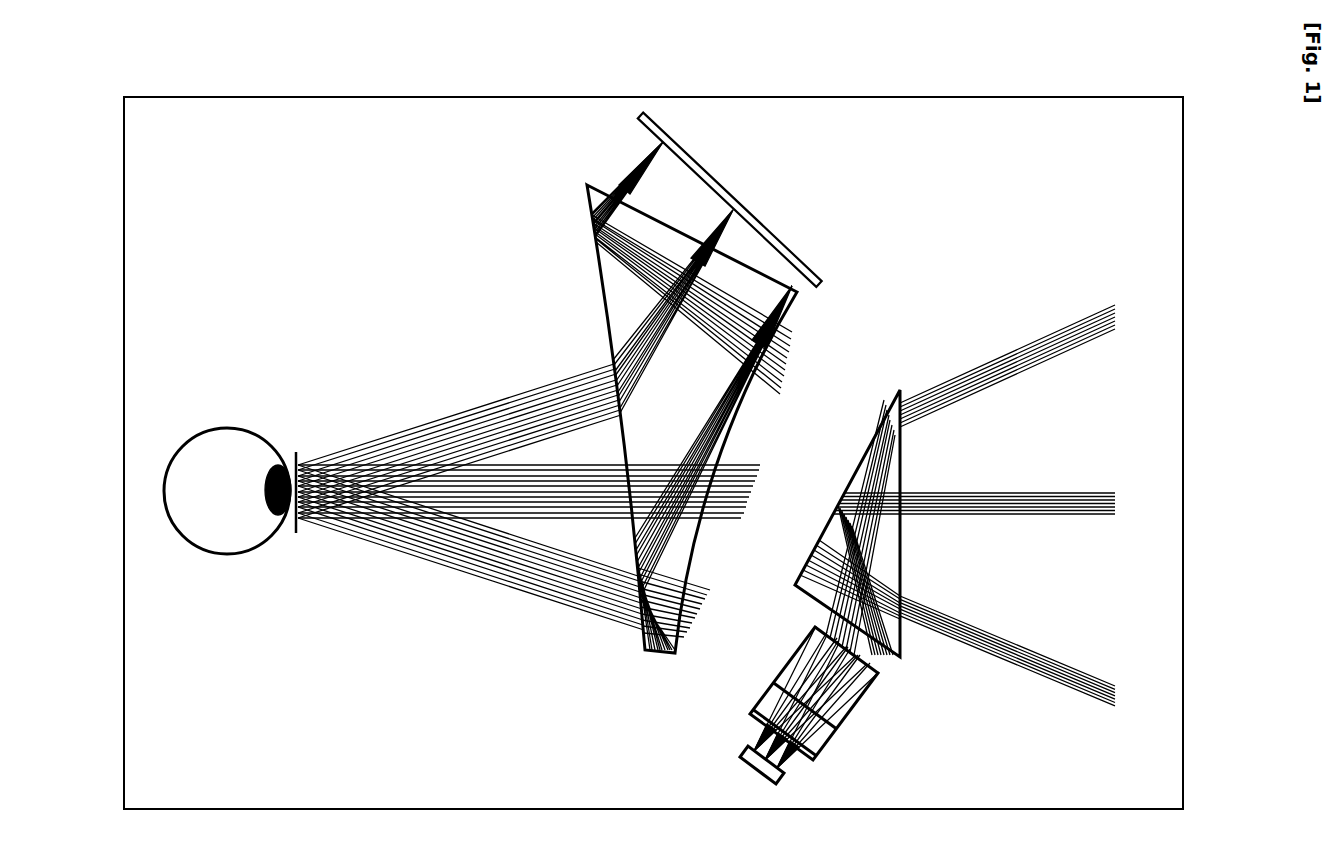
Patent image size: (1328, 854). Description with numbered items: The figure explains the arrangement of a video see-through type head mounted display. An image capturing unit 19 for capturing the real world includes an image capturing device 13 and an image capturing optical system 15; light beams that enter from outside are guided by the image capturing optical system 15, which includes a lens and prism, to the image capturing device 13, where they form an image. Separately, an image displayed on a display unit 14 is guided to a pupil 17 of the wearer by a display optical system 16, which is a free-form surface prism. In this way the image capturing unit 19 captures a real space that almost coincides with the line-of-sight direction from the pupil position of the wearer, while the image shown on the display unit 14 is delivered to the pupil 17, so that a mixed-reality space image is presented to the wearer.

The image capturing device 13 is at (742, 760).
The display unit 14 is at (699, 162).
The image capturing optical system 15 is at (860, 700).
The display optical system 16 is at (600, 292).
The pupil 17 is at (205, 432).
The image capturing unit 19 is at (887, 740).